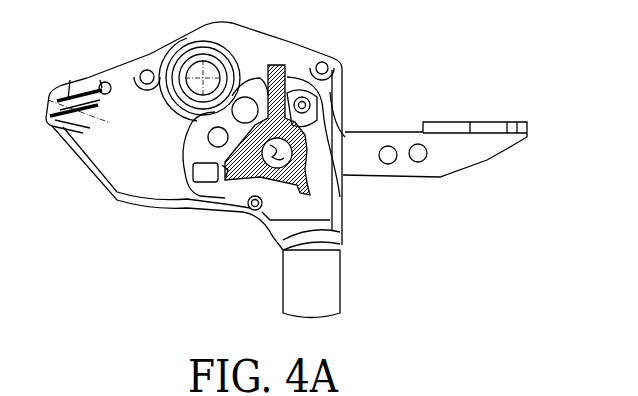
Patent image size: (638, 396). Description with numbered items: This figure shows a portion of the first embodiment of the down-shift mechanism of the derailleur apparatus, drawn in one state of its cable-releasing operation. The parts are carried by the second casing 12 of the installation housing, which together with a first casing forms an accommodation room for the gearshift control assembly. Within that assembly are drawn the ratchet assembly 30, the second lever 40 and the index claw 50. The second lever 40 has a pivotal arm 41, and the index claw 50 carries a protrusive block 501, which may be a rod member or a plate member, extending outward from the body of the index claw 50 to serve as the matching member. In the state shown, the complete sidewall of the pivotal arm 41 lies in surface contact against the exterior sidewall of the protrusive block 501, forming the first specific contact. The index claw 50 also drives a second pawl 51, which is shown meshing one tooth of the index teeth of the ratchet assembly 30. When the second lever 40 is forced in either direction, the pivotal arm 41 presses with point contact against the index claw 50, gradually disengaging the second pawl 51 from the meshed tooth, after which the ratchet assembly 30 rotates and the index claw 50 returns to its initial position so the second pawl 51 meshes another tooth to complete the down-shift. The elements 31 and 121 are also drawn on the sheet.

The second casing 12 is at (108, 58).
The ratchet assembly 30 is at (193, 155).
The pocket 31 is at (203, 178).
The second lever 40 is at (472, 195).
The pivotal arm 41 is at (350, 138).
The index claw 50 is at (312, 182).
The protrusive block 501 is at (272, 65).
The second pawl 51 is at (222, 168).
The cylindrical portion 121 is at (323, 277).